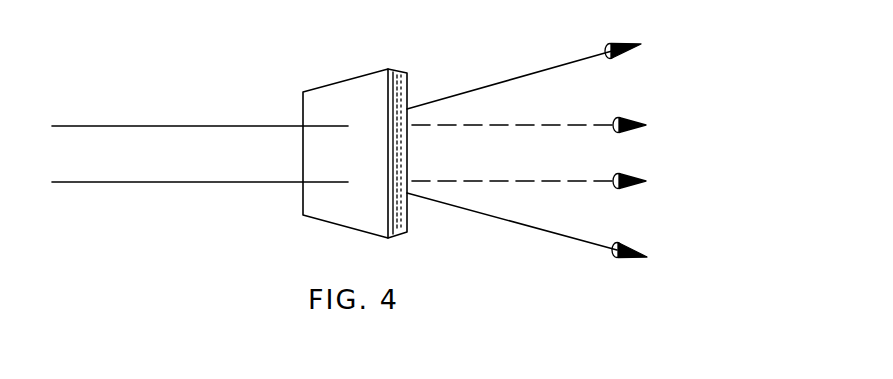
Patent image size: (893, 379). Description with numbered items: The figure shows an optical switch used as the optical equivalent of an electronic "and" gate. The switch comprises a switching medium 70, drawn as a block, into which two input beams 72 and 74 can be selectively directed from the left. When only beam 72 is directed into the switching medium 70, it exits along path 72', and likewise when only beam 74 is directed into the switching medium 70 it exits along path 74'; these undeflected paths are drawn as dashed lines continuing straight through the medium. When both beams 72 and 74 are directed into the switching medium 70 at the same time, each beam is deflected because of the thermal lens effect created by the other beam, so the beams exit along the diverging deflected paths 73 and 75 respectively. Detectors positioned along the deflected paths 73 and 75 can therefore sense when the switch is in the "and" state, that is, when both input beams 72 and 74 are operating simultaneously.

The switching medium 70 is at (347, 80).
The input beam 72 is at (200, 102).
The input beam 74 is at (200, 204).
The deflected beam path 73 is at (518, 78).
The exit path 72' is at (529, 106).
The exit path 74' is at (529, 167).
The deflected beam path 75 is at (558, 233).